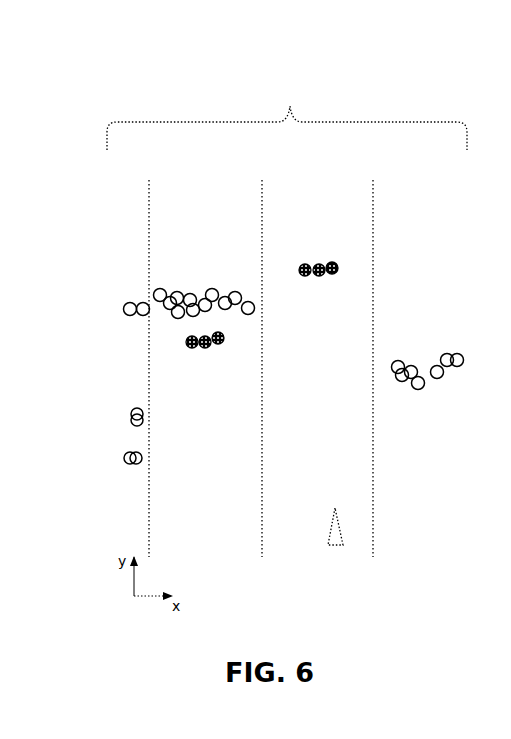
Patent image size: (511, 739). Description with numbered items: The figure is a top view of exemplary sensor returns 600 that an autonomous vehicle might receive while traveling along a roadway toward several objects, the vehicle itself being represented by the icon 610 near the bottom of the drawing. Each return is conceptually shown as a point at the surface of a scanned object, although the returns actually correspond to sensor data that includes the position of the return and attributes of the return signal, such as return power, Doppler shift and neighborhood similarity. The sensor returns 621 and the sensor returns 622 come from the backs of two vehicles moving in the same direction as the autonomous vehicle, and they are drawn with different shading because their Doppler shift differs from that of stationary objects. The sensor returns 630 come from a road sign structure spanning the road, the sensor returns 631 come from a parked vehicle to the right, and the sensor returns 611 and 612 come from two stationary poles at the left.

The sensor returns 600 is at (287, 103).
The icon 610 is at (333, 535).
The sensor returns 611 is at (121, 478).
The sensor returns 612 is at (121, 410).
The sensor returns 621 is at (320, 252).
The sensor returns 622 is at (198, 360).
The sensor returns 630 is at (193, 272).
The sensor returns 631 is at (441, 338).